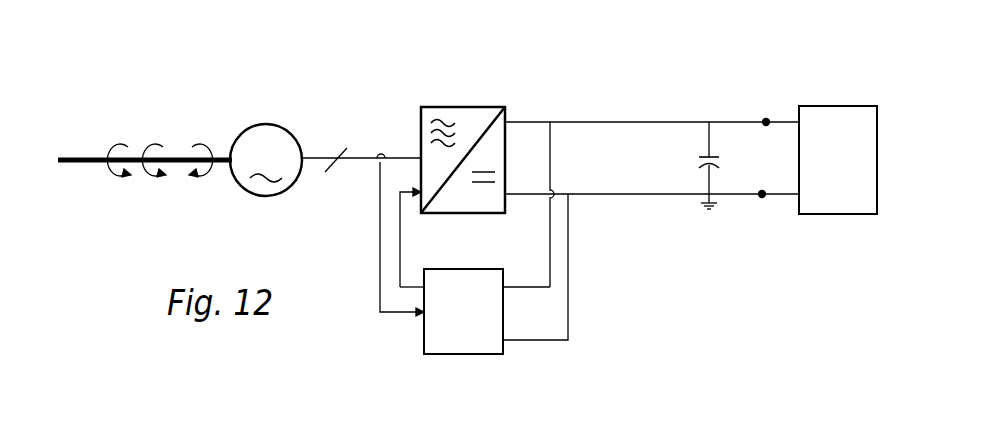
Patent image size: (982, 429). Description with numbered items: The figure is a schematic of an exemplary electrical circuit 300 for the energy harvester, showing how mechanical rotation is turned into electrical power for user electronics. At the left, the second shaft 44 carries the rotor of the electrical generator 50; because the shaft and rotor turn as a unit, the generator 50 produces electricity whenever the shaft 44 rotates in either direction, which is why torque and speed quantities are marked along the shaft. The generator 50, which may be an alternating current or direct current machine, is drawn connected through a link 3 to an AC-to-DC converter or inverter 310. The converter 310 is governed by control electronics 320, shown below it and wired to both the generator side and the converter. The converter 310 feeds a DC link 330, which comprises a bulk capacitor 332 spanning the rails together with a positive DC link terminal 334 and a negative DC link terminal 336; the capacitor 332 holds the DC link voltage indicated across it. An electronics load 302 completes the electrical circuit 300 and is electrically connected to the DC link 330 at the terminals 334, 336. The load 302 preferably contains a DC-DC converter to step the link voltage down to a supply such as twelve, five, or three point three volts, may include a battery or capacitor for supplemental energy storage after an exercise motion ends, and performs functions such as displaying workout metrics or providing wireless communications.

The second shaft 44 is at (90, 157).
The electrical generator 50 is at (263, 140).
The three-phase connection 3 is at (361, 155).
The electrical circuit 300 is at (430, 214).
The AC-to-DC converter 310 is at (453, 115).
The control electronics 320 is at (457, 340).
The DC link 330 is at (646, 208).
The bulk capacitor 332 is at (722, 164).
The positive DC link terminal 334 is at (767, 120).
The negative DC link terminal 336 is at (762, 199).
The electronics load 302 is at (842, 196).